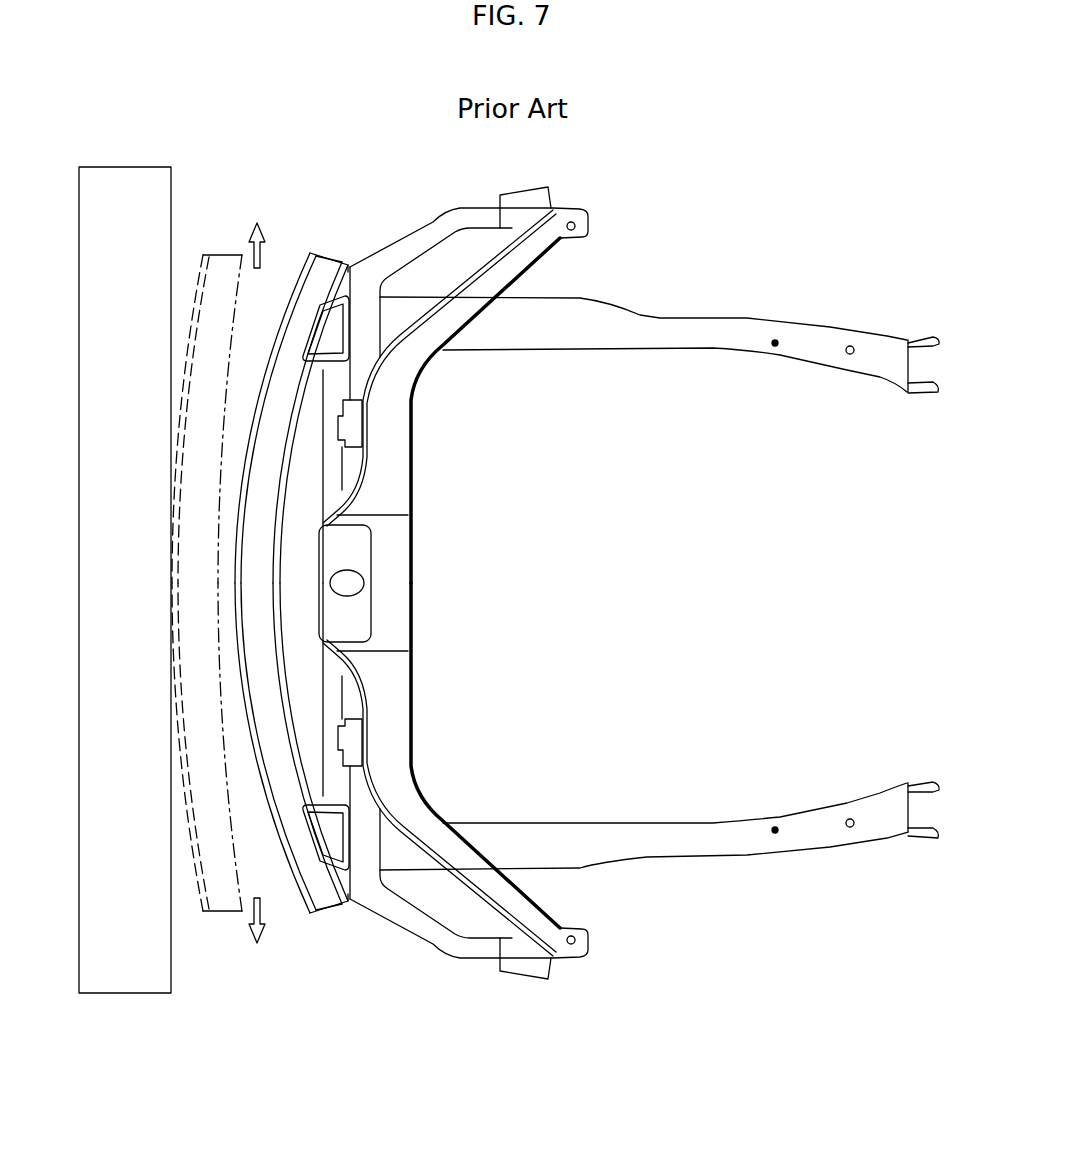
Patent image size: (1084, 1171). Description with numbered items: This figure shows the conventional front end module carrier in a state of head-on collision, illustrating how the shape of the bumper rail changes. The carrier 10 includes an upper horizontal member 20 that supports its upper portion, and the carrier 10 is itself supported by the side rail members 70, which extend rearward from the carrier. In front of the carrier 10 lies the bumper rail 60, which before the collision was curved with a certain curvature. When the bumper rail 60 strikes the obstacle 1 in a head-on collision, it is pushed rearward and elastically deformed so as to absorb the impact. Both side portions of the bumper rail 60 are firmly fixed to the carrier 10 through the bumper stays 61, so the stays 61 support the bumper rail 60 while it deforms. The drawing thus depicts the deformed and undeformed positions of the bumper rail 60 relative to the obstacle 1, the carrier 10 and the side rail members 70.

The obstacle 1 is at (160, 188).
The carrier 10 is at (587, 585).
The upper horizontal member 20 is at (397, 700).
The bumper rail 60 is at (333, 268).
The bumper stay 61 is at (340, 327).
The side rail member 70 is at (617, 320).